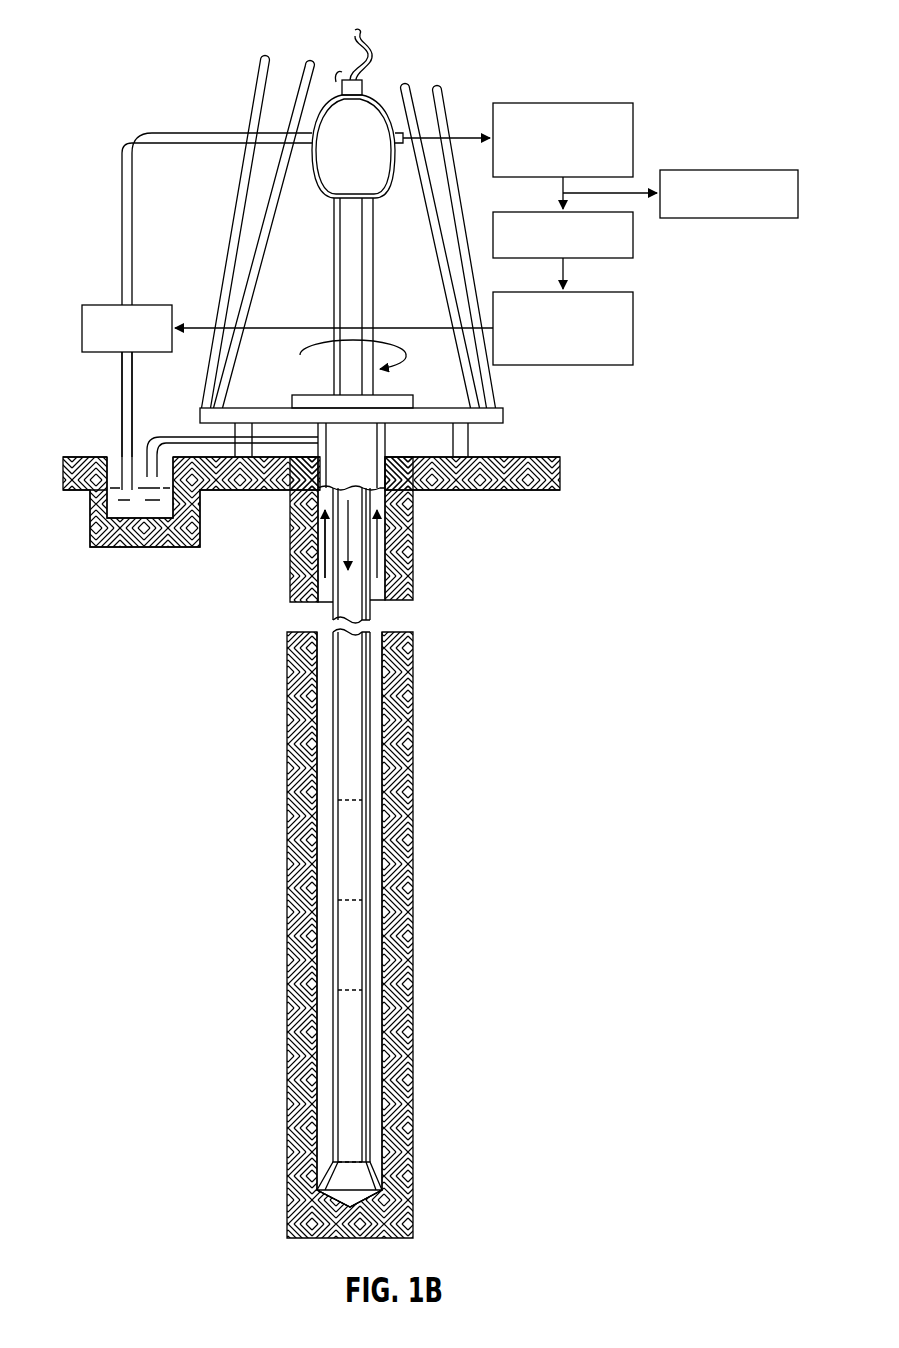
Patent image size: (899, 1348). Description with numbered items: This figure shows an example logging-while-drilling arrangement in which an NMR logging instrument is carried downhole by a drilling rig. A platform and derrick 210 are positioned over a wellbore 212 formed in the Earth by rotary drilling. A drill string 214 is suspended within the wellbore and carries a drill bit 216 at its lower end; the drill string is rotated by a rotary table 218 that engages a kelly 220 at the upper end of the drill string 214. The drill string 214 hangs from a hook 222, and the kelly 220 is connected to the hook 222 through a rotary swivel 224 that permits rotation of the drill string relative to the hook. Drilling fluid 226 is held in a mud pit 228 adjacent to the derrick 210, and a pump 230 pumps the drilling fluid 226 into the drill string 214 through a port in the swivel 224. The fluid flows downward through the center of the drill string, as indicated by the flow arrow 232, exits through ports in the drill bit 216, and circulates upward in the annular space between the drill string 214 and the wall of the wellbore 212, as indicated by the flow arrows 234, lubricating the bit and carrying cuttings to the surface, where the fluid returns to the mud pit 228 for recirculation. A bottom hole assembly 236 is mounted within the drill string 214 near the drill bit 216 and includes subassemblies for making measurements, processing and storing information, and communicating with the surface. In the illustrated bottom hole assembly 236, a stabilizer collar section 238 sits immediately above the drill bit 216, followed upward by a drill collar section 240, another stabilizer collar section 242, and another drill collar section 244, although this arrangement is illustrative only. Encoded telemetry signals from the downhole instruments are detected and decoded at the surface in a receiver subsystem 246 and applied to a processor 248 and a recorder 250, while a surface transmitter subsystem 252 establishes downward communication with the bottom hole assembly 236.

The platform and derrick 210 is at (522, 422).
The wellbore 212 is at (372, 607).
The drill string 214 is at (374, 672).
The drill bit 216 is at (338, 1183).
The rotary table 218 is at (375, 400).
The kelly 220 is at (353, 265).
The hook 222 is at (368, 36).
The rotary swivel 224 is at (340, 195).
The drilling fluid 226 is at (152, 505).
The mud pit 228 is at (107, 503).
The pump 230 is at (105, 305).
The flow arrow 232 is at (345, 538).
The flow arrows 234 is at (382, 527).
The bottom hole assembly 236 is at (437, 1134).
The stabilizer collar section 238 is at (345, 1030).
The drill collar section 240 is at (345, 942).
The stabilizer collar section 242 is at (345, 845).
The drill collar section 244 is at (333, 727).
The receiver subsystem 246 is at (542, 103).
The processor 248 is at (542, 212).
The recorder 250 is at (708, 170).
The surface transmitter subsystem 252 is at (542, 292).